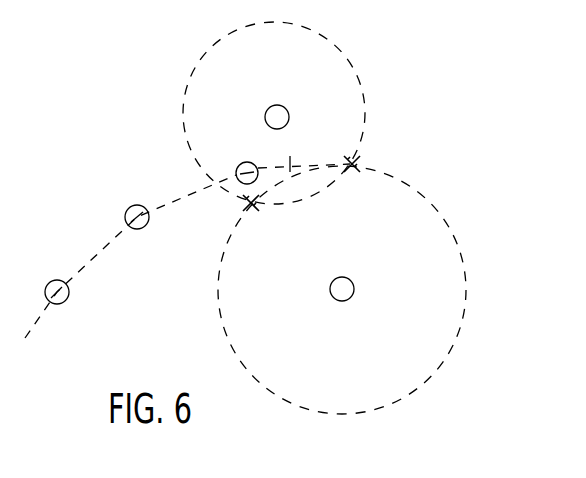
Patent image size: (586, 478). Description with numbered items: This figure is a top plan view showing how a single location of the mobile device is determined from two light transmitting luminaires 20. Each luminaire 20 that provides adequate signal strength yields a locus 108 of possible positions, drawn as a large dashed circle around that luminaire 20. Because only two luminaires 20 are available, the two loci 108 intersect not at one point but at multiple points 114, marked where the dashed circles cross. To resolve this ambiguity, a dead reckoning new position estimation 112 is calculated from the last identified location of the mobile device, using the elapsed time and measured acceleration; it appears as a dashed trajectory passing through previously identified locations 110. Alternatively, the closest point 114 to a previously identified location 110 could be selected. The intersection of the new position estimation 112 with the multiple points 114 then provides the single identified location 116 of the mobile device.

The luminaire 20 is at (285, 108).
The locus of possible positions 108 is at (390, 176).
The previously identified location 110 is at (145, 229).
The new position estimation 112 is at (187, 193).
The point 114 is at (356, 168).
The single identified location 116 is at (244, 162).